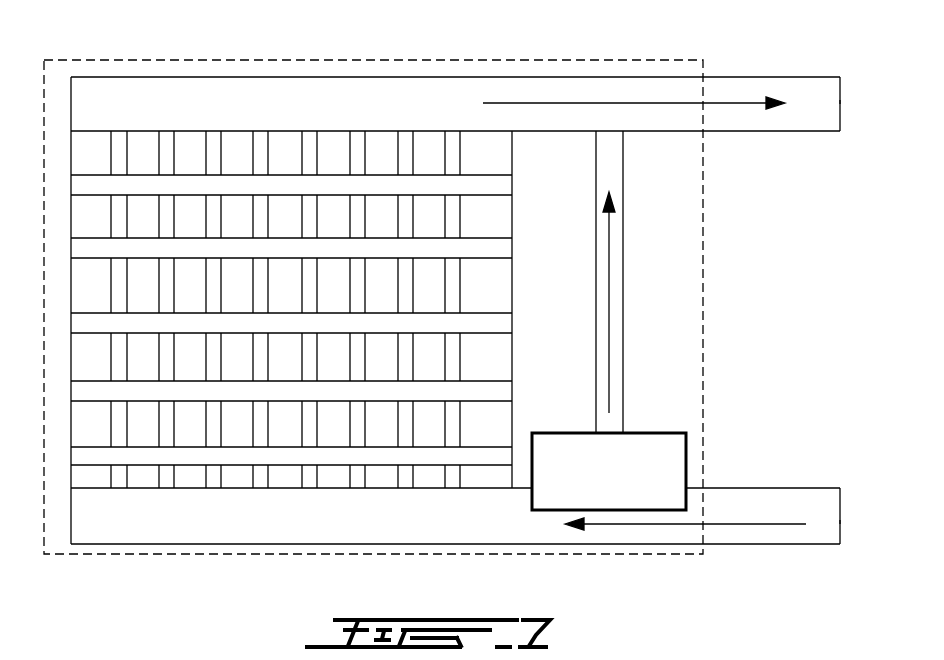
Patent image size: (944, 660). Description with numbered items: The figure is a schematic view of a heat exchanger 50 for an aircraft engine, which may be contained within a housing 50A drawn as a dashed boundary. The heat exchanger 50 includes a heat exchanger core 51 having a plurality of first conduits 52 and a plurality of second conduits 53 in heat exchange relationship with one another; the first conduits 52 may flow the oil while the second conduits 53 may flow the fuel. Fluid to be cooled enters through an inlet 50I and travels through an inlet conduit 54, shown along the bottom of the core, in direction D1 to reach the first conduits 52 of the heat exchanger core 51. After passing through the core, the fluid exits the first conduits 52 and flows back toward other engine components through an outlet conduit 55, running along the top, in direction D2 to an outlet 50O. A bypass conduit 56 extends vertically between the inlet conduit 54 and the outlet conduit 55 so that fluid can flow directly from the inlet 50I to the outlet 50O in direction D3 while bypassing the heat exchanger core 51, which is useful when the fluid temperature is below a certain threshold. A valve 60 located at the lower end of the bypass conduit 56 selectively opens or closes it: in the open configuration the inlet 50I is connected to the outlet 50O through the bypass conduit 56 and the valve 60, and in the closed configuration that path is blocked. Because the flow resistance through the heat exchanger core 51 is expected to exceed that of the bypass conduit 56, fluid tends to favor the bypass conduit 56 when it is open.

The heat exchanger 50 is at (808, 218).
The housing 50A is at (703, 178).
The outlet 50O is at (840, 103).
The inlet 50I is at (840, 510).
The heat exchanger core 51 is at (71, 277).
The first conduit 52 is at (213, 478).
The second conduit 53 is at (85, 458).
The inlet conduit 54 is at (446, 516).
The outlet conduit 55 is at (305, 103).
The bypass conduit 56 is at (623, 352).
The valve 60 is at (686, 450).
The direction D1 is at (685, 525).
The direction D2 is at (613, 103).
The direction D3 is at (609, 267).